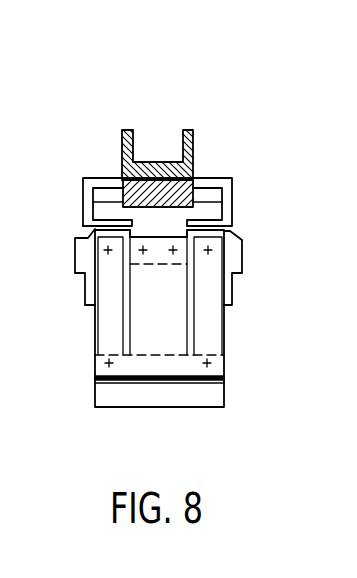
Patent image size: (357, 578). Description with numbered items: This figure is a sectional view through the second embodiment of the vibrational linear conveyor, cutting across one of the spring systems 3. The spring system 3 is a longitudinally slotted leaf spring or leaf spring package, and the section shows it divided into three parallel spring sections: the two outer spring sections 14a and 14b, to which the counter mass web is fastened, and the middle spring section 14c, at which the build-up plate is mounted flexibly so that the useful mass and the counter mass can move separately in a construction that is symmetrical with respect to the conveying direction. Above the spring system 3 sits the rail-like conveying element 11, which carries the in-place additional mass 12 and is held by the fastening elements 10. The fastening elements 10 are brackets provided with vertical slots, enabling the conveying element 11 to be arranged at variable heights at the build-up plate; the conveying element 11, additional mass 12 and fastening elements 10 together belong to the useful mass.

The spring system 3 is at (207, 330).
The fastening element 10 is at (181, 194).
The conveying element 11 is at (193, 136).
The additional mass 12 is at (188, 188).
The spring section 14a is at (220, 248).
The spring section 14b is at (103, 258).
The middle spring section 14c is at (180, 257).